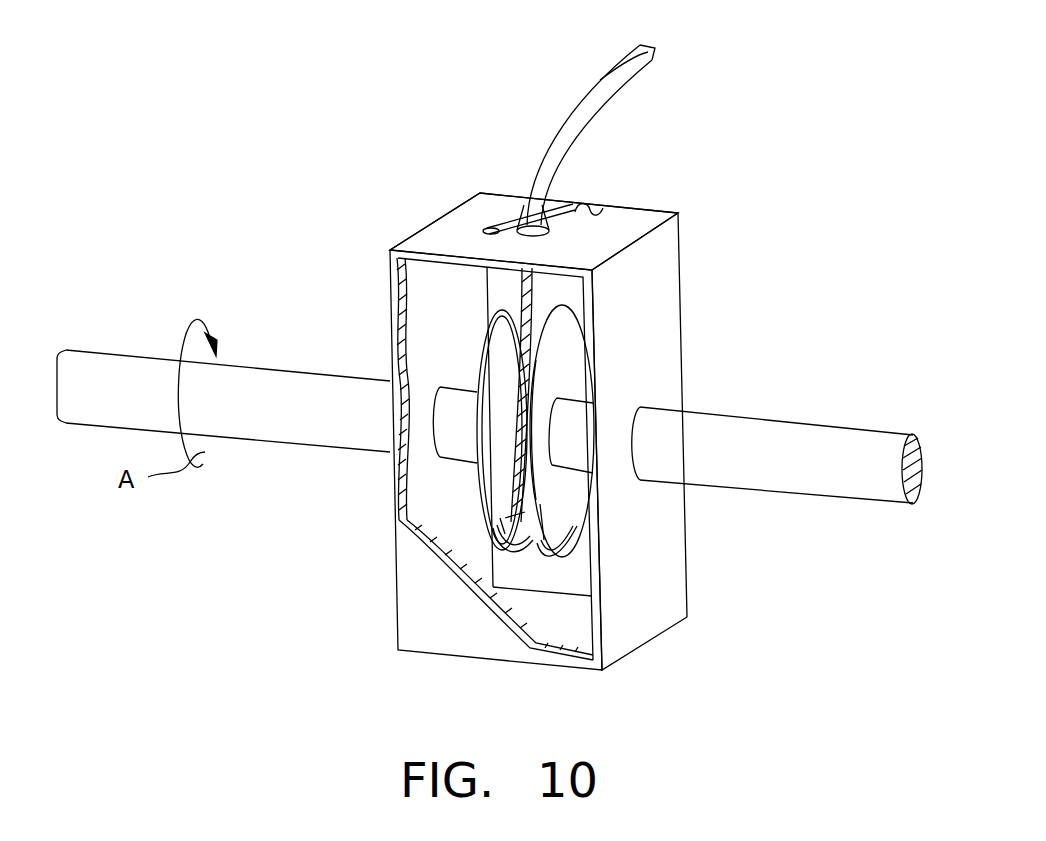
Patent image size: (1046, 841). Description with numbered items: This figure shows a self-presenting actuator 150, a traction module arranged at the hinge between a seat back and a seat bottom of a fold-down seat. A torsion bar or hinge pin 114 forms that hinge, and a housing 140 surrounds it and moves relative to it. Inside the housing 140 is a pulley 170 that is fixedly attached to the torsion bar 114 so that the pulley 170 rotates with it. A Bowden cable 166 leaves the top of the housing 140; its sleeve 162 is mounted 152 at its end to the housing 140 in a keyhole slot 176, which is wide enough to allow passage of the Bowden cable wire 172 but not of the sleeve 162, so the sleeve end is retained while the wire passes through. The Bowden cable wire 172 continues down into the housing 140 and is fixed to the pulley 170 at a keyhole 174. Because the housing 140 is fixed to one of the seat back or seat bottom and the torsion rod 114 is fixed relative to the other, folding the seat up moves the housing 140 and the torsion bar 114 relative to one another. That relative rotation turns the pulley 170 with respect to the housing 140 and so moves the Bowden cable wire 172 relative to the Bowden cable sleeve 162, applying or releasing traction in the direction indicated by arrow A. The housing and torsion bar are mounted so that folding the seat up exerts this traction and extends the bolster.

The torsion bar or hinge pin 114 is at (782, 416).
The housing 140 is at (642, 620).
The tension assembly 150 is at (722, 98).
The mounting of the sleeve end 152 is at (503, 232).
The sleeve 162 is at (575, 118).
The Bowden cable 166 is at (606, 56).
The pulley 170 is at (560, 358).
The Bowden cable wire 172 is at (530, 306).
The keyhole 174 is at (545, 512).
The keyhole slot 176 is at (590, 212).